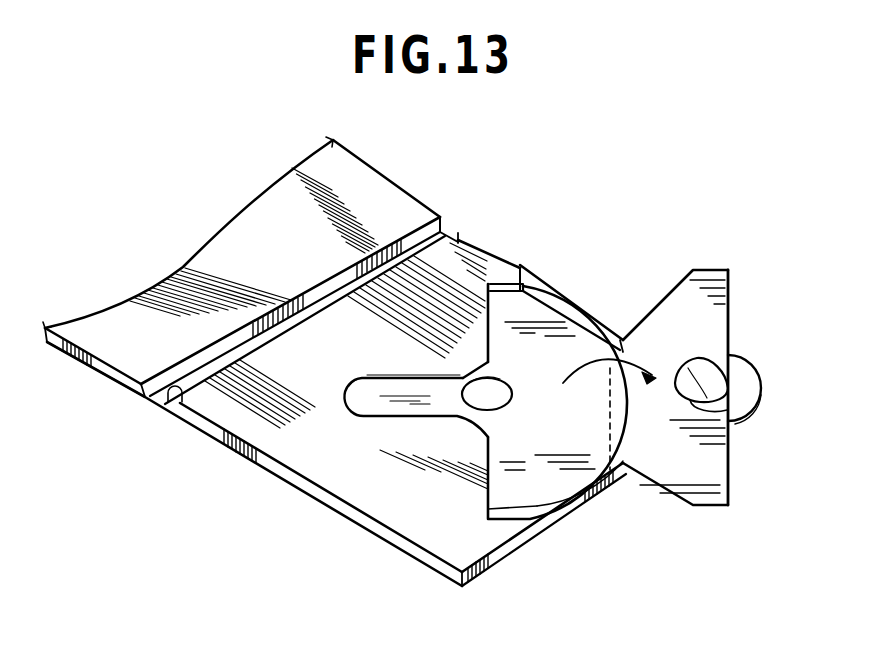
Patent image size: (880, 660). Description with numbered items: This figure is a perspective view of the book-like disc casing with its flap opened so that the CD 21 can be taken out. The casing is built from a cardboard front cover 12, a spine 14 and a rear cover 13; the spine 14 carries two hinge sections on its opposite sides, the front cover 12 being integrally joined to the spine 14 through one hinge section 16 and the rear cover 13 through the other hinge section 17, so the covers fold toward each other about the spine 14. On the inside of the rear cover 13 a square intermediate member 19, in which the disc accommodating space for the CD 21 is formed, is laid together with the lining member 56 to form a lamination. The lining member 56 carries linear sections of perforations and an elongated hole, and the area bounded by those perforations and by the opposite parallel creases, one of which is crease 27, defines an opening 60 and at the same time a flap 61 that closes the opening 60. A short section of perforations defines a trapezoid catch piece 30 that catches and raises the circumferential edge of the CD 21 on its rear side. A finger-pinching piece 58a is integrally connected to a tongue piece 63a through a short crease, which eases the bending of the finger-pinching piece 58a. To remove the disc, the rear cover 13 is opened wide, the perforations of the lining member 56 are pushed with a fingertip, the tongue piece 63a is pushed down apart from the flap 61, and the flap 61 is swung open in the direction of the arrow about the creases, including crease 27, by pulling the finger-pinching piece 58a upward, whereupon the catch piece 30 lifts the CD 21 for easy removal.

The front cover 12 is at (93, 370).
The rear cover 13 is at (321, 495).
The spine 14 is at (163, 396).
The hinge section 16 is at (145, 390).
The hinge section 17 is at (178, 393).
The intermediate member 19 is at (521, 267).
The CD 21 is at (543, 455).
The parallel crease 27 is at (607, 342).
The trapezoid catch piece 30 is at (601, 505).
The lining member 56 is at (460, 234).
The finger-pinching piece 58a is at (748, 372).
The opening 60 is at (618, 344).
The flap 61 is at (703, 323).
The tongue piece 63a is at (728, 425).